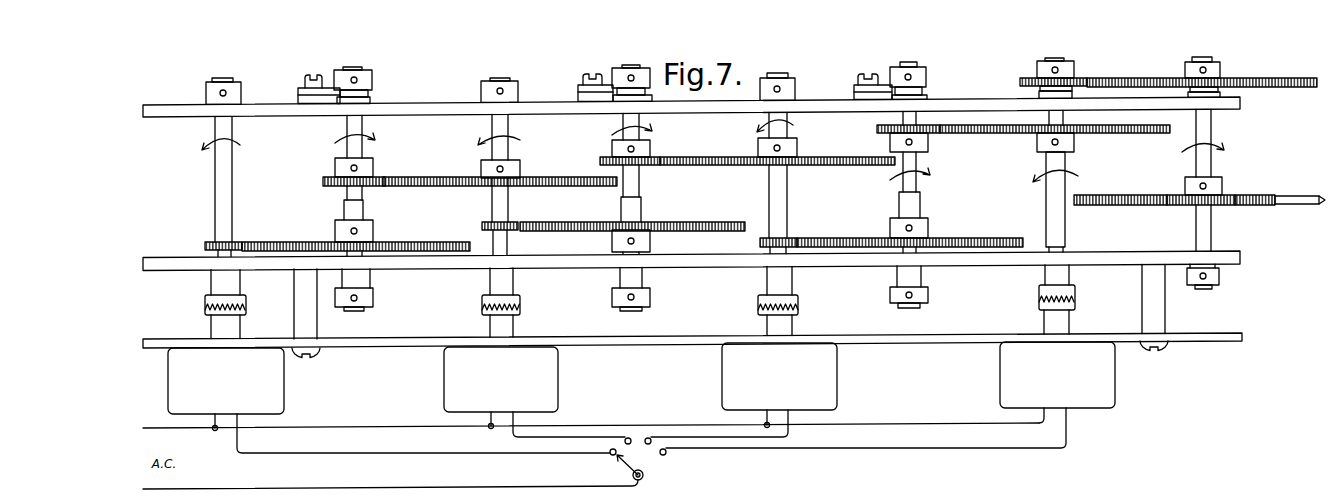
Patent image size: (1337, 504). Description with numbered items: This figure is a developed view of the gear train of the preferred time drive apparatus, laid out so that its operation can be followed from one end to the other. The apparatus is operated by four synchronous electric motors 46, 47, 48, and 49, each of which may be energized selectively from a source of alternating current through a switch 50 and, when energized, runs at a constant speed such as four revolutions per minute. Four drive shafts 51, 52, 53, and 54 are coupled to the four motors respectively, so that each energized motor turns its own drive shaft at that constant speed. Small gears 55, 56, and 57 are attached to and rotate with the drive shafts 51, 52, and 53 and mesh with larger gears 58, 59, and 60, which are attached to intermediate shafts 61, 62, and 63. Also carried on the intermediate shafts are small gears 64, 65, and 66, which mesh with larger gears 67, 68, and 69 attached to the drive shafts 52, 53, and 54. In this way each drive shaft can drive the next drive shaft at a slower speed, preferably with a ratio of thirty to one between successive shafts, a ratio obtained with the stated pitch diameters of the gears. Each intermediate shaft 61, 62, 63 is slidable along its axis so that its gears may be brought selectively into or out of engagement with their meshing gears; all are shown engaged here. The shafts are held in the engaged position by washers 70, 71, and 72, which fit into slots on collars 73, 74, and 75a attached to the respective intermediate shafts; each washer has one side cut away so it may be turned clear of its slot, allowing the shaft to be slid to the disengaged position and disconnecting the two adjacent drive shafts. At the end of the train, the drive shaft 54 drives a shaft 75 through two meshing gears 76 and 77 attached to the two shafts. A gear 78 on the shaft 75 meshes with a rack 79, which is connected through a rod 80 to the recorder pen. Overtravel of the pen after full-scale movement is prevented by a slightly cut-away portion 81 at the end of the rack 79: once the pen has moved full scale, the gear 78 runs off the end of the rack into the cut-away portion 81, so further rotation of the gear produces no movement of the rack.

The synchronous electric motor 46 is at (226, 381).
The synchronous electric motor 47 is at (501, 379).
The synchronous electric motor 48 is at (779, 376).
The synchronous electric motor 49 is at (1057, 375).
The switch 50 is at (643, 480).
The drive shaft 51 is at (232, 189).
The drive shaft 52 is at (508, 202).
The drive shaft 53 is at (788, 193).
The drive shaft 54 is at (1066, 223).
The small gear 55 is at (208, 242).
The small gear 56 is at (482, 223).
The small gear 57 is at (758, 242).
The larger gear 58 is at (412, 242).
The larger gear 59 is at (698, 222).
The larger gear 60 is at (972, 237).
The intermediate shaft 61 is at (347, 210).
The intermediate shaft 62 is at (621, 209).
The intermediate shaft 63 is at (899, 204).
The small gear 64 is at (323, 179).
The small gear 65 is at (602, 158).
The small gear 66 is at (877, 129).
The larger gear 67 is at (428, 177).
The larger gear 68 is at (702, 157).
The larger gear 69 is at (1055, 141).
The washer 70 is at (299, 93).
The washer 71 is at (578, 90).
The washer 72 is at (854, 86).
The collar 73 is at (372, 86).
The collar 74 is at (650, 83).
The collar 75a is at (926, 75).
The shaft 75 is at (1198, 165).
The gear 76 is at (1020, 82).
The gear 77 is at (1262, 78).
The gear 78 is at (1213, 205).
The rack 79 is at (1263, 195).
The rod 80 is at (1319, 204).
The cutaway portion 81 is at (1295, 196).